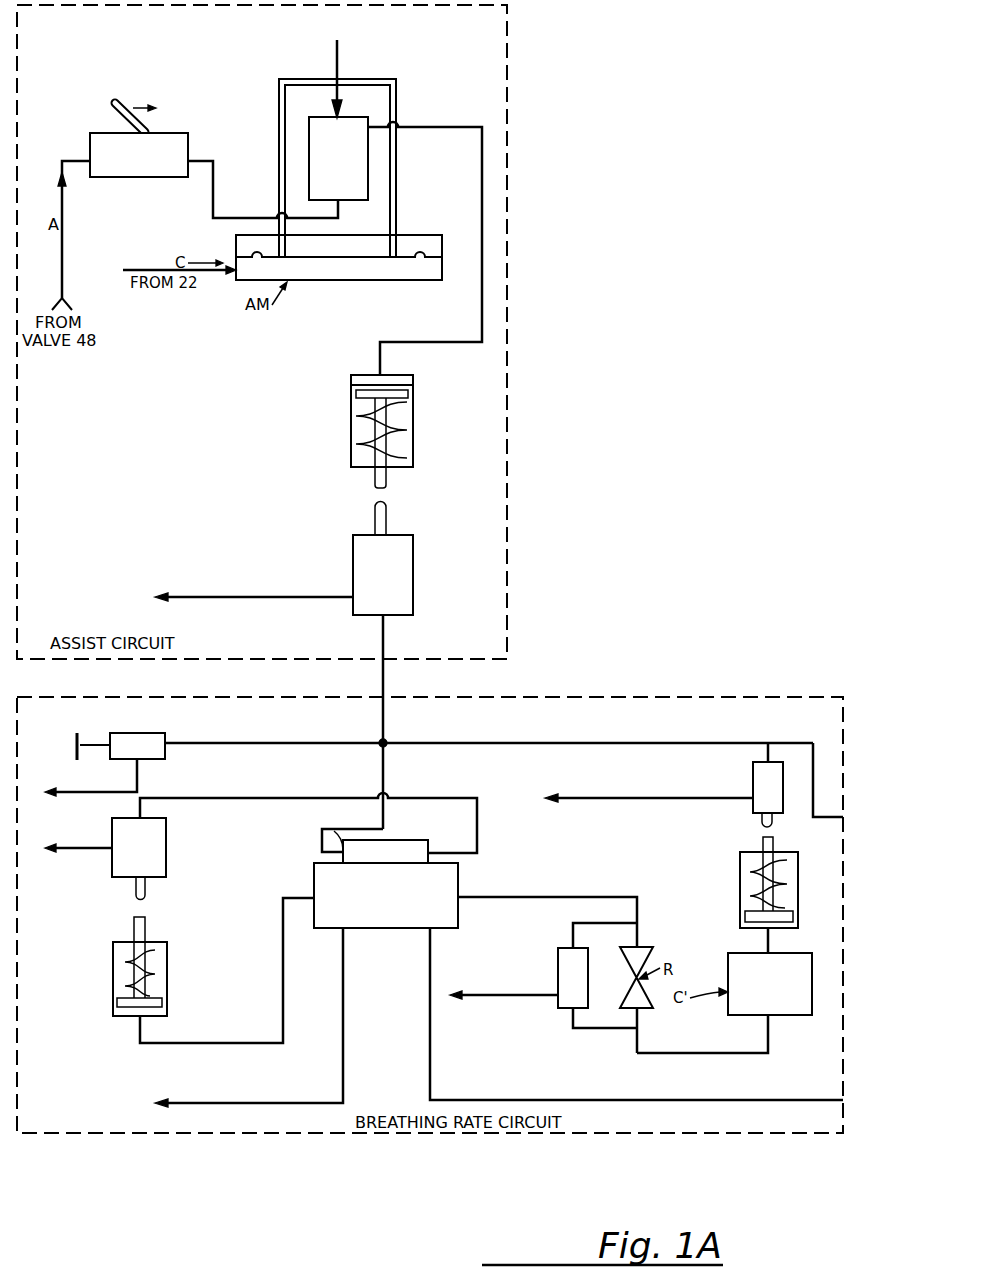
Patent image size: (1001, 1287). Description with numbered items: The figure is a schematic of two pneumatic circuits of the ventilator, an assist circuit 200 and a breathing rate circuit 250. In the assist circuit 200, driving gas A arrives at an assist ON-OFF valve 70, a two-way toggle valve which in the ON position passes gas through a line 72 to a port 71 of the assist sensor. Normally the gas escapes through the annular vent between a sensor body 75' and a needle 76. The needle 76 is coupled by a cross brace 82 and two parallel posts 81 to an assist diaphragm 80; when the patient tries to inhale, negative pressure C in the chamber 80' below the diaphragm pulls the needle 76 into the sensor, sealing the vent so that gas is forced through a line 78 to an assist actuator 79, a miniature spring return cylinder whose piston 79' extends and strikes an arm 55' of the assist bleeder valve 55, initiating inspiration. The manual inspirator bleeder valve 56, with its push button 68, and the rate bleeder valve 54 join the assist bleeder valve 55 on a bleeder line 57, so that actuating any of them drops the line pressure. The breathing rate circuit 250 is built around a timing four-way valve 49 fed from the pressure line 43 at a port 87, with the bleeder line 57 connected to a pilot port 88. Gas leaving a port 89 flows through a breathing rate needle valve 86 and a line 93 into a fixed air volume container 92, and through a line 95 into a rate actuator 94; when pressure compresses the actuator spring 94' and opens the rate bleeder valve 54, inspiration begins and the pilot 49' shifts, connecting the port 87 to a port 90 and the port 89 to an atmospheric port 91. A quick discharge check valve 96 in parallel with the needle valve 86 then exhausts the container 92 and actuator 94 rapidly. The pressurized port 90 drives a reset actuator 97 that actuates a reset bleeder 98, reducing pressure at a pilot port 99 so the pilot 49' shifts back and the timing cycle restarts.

The assist circuit 200 is at (515, 256).
The breathing rate circuit 250 is at (627, 690).
The needle 76 is at (339, 56).
The cross brace 82 is at (296, 78).
The parallel posts 81 is at (397, 87).
The sensor body 75' is at (298, 158).
The assist ON-OFF valve 70 is at (170, 133).
The line 72 is at (213, 195).
The port 71 is at (340, 203).
The line 78 is at (482, 293).
The assist diaphragm 80 is at (339, 271).
The chamber 80' is at (314, 292).
The assist actuator 79 is at (349, 421).
The piston 79' is at (337, 443).
The assist bleeder valve 55 is at (284, 575).
The arm 55' is at (335, 518).
The push button 68 is at (74, 739).
The manual inspirator bleeder valve 56 is at (155, 733).
The reset bleeder 98 is at (166, 836).
The reset actuator 97 is at (167, 960).
The port 90 is at (314, 897).
The pilot port 88 is at (336, 830).
The pilot 49' is at (393, 835).
The pilot port 99 is at (432, 851).
The timing 4-way valve 49 is at (411, 896).
The port 89 is at (458, 896).
The port 87 is at (432, 932).
The atmospheric port 91 is at (343, 932).
The pressure line 43 is at (675, 1100).
The rate bleeder valve 54 is at (753, 776).
The bleeder line 57 is at (812, 787).
The rate actuator 94 is at (741, 882).
The actuator spring 94' is at (736, 884).
The line 95 is at (770, 938).
The breathing rate needle valve 86 is at (645, 950).
The quick discharge check valve 96 is at (558, 959).
The fixed air volume container 92 is at (727, 962).
The line 93 is at (705, 1053).